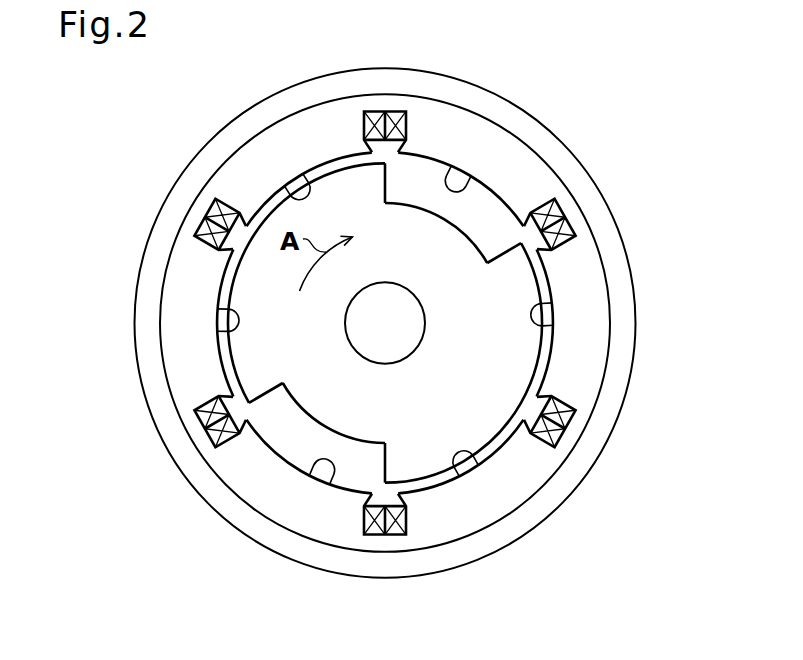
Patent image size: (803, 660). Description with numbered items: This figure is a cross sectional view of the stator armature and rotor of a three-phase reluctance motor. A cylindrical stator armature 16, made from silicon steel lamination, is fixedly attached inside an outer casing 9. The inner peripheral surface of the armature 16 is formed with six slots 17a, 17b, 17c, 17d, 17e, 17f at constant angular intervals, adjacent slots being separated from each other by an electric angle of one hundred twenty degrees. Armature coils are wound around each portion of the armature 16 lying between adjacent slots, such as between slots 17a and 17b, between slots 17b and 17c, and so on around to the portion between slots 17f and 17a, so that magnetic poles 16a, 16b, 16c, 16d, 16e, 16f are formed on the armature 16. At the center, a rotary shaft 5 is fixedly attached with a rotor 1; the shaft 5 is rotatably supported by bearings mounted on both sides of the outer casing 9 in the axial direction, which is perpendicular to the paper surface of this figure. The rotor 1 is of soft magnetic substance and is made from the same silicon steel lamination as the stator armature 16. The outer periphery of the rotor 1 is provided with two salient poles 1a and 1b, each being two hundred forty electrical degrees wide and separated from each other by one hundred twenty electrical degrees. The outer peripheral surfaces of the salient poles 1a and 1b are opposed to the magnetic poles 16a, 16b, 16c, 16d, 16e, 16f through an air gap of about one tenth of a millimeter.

The rotor 1 is at (484, 279).
The salient pole 1a is at (374, 183).
The salient pole 1b is at (388, 463).
The rotary shaft 5 is at (425, 335).
The outer casing 9 is at (582, 163).
The stator armature 16 is at (514, 150).
The magnetic pole 16a is at (458, 185).
The magnetic pole 16b is at (545, 320).
The magnetic pole 16c is at (470, 463).
The magnetic pole 16d is at (322, 468).
The magnetic pole 16e is at (226, 322).
The magnetic pole 16f is at (297, 196).
The slot 17a is at (391, 112).
The slot 17b is at (568, 220).
The slot 17c is at (570, 413).
The slot 17d is at (400, 534).
The slot 17e is at (214, 443).
The slot 17f is at (201, 232).